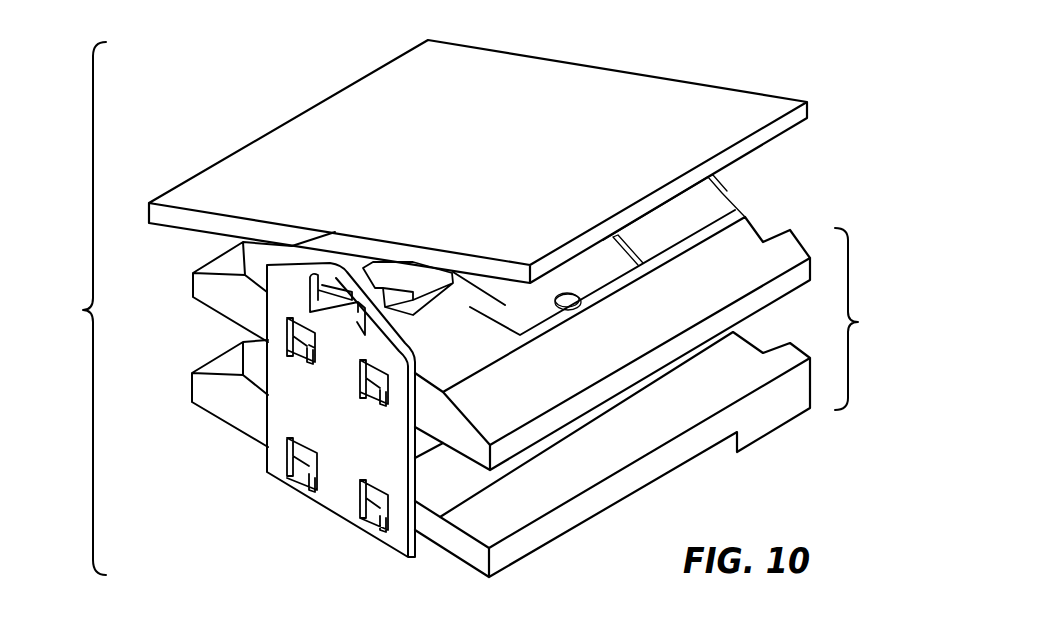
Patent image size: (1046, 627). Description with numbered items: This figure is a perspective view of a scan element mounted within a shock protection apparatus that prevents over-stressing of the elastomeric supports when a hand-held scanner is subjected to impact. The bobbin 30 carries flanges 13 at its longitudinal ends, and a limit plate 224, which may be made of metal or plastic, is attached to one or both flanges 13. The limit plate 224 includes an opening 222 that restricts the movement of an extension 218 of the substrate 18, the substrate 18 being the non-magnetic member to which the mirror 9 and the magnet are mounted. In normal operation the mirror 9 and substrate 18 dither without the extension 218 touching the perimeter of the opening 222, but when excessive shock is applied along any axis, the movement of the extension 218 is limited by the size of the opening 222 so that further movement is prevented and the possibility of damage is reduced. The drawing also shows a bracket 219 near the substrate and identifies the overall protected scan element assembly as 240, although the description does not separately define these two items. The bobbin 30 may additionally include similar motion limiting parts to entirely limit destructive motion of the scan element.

The mirror 9 is at (343, 107).
The substrate 18 is at (415, 277).
The bracket 219 is at (385, 277).
The flange 13 is at (753, 242).
The bobbin 30 is at (870, 319).
The limit plate 224 is at (280, 396).
The extension of the substrate 218 is at (313, 302).
The opening 222 is at (342, 300).
The assembly 240 is at (64, 308).